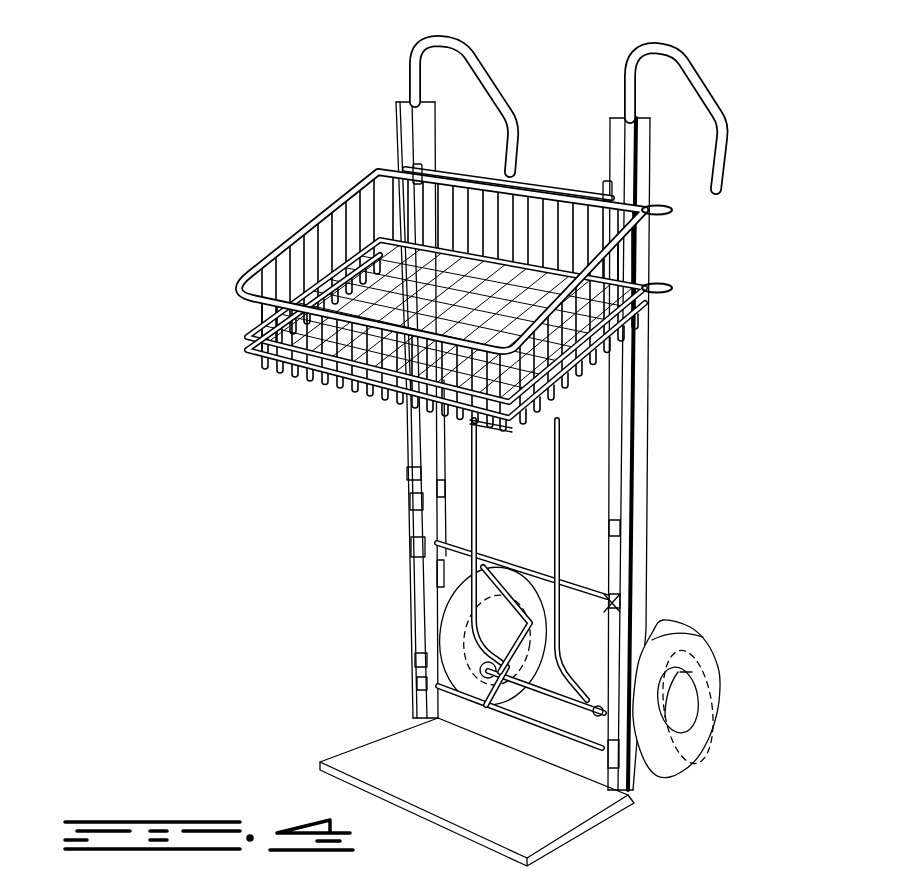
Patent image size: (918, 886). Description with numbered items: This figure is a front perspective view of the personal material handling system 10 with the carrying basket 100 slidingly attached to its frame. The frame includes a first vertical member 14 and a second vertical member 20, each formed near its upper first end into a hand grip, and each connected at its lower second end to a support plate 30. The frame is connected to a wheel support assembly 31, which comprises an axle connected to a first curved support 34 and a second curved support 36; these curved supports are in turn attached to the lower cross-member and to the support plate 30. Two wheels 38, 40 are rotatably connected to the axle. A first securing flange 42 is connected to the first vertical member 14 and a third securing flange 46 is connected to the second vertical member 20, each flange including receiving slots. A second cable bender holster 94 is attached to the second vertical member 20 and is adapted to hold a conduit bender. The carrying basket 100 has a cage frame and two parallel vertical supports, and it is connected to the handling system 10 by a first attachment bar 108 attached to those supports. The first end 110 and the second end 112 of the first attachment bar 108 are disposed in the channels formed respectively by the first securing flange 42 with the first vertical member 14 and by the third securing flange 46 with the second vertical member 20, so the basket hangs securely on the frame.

The handling system 10 is at (477, 440).
The first vertical member 14 is at (408, 98).
The second vertical member 20 is at (624, 116).
The support plate 30 is at (358, 742).
The wheel support assembly 31 is at (685, 605).
The first curved support 34 is at (504, 585).
The second curved support 36 is at (615, 598).
The wheel 38 is at (442, 603).
The wheel 40 is at (698, 627).
The first securing flange 42 is at (397, 130).
The third securing flange 46 is at (610, 136).
The second cable bender holster 94 is at (668, 214).
The carrying basket 100 is at (440, 281).
The first attachment bar 108 is at (523, 182).
The first end 110 is at (418, 165).
The second end 112 is at (607, 184).